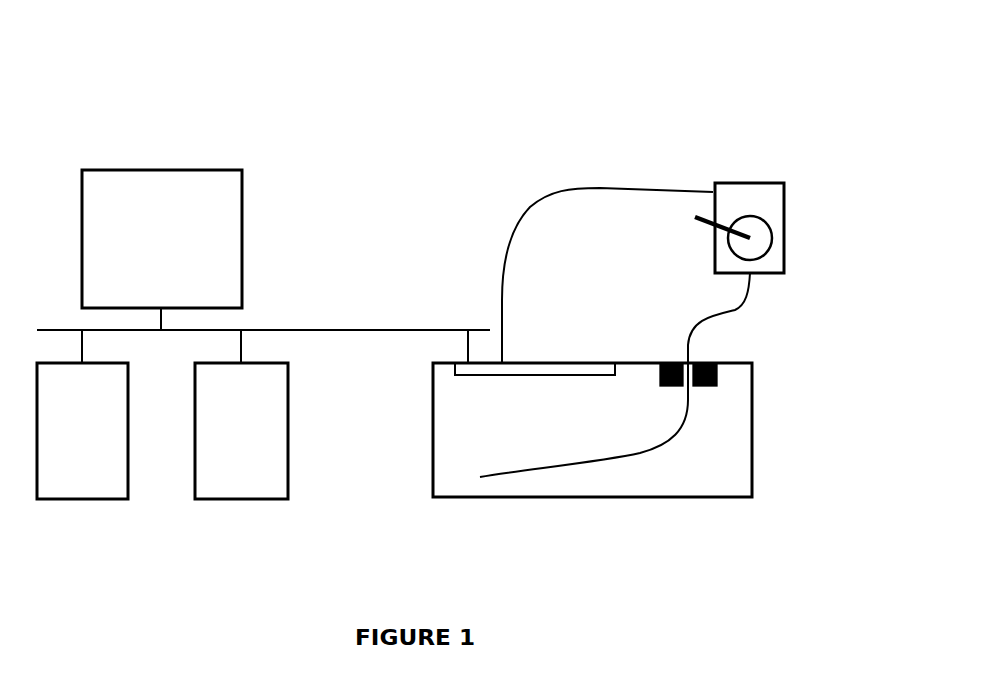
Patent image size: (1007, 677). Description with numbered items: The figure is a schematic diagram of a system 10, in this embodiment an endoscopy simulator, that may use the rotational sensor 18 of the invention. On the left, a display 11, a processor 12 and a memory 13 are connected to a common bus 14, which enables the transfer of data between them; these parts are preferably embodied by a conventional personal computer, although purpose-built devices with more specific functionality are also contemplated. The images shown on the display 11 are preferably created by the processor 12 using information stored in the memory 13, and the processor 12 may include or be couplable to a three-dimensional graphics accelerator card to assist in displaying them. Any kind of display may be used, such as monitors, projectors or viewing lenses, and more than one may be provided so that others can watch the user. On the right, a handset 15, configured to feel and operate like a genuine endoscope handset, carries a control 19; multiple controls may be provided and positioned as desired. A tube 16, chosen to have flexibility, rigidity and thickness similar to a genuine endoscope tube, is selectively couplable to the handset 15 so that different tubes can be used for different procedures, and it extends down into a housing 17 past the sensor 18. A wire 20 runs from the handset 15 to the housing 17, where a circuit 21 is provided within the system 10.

The system 10 is at (570, 102).
The display 11 is at (127, 170).
The processor 12 is at (70, 500).
The memory 13 is at (228, 500).
The bus 14 is at (298, 330).
The handset 15 is at (750, 183).
The tube 16 is at (742, 307).
The housing 17 is at (752, 457).
The sensor 18 is at (717, 375).
The control 19 is at (770, 237).
The wire 20 is at (522, 227).
The circuit 21 is at (488, 375).